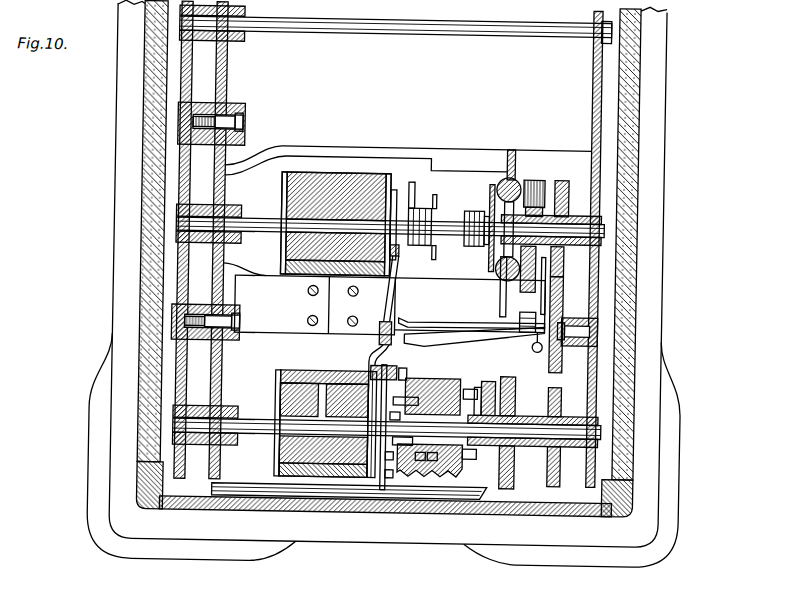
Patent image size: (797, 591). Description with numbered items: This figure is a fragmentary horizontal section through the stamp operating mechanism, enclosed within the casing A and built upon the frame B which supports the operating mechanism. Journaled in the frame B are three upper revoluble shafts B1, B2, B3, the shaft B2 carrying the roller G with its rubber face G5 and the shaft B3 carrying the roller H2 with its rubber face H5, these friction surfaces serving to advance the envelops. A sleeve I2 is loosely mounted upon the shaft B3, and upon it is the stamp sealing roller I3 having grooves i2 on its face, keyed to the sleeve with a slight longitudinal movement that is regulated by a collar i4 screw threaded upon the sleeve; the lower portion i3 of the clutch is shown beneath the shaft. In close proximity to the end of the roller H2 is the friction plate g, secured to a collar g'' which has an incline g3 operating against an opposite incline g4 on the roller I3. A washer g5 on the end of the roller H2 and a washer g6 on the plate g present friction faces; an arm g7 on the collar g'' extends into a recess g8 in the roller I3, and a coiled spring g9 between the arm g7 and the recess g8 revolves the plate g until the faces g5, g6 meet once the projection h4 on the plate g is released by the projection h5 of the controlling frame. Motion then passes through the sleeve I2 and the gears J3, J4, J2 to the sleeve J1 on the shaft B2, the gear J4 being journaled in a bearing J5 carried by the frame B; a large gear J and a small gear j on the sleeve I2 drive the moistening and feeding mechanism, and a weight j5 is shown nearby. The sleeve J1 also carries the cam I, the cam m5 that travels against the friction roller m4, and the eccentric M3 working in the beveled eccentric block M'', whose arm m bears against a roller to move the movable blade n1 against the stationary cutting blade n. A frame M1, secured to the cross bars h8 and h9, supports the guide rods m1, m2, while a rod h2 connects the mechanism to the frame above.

The casing A is at (145, 236).
The frame B is at (591, 97).
The upper revoluble shaft B1 is at (298, 32).
The upper revoluble shaft B2 is at (265, 226).
The upper revoluble shaft B3 is at (258, 433).
The rubber face G5 is at (345, 174).
The roller G is at (390, 223).
The cam I is at (414, 198).
The friction roller m4 is at (433, 250).
The sleeve J1 is at (466, 240).
The cam m5 is at (486, 242).
The cross bar h9 is at (310, 158).
The cross bar h8 is at (383, 300).
The connecting rod h2 is at (386, 300).
The projection h5 is at (383, 354).
The projection h4 is at (372, 378).
The projecting arm g7 is at (406, 380).
The stationary cutting blade n is at (424, 321).
The movable blade n1 is at (460, 334).
The frame M1 is at (488, 206).
The guide rod m2 is at (498, 185).
The guide rod m1 is at (505, 279).
The eccentric block M'' is at (503, 290).
The arm m is at (541, 300).
The weight j5 is at (525, 336).
The small gear j is at (530, 340).
The gear wheel J2 is at (564, 198).
The eccentric M3 is at (563, 262).
The gear J4 is at (563, 347).
The bearing J5 is at (570, 343).
The large gear J is at (521, 382).
The gear wheel J3 is at (556, 462).
The stamp sealing roller I3 is at (445, 392).
The ratchet clutch member i3 is at (470, 460).
The grooves i2 is at (430, 388).
The collar i4 is at (479, 388).
The sleeve I2 is at (488, 390).
The friction plate g is at (389, 427).
The incline g3 is at (405, 391).
The incline g4 is at (405, 445).
The collar g'' is at (387, 475).
The washer g5 is at (386, 478).
The washer g6 is at (389, 460).
The recess g8 is at (420, 460).
The coiled spring g9 is at (437, 460).
The rubber face H5 is at (320, 361).
The roller H2 is at (280, 398).